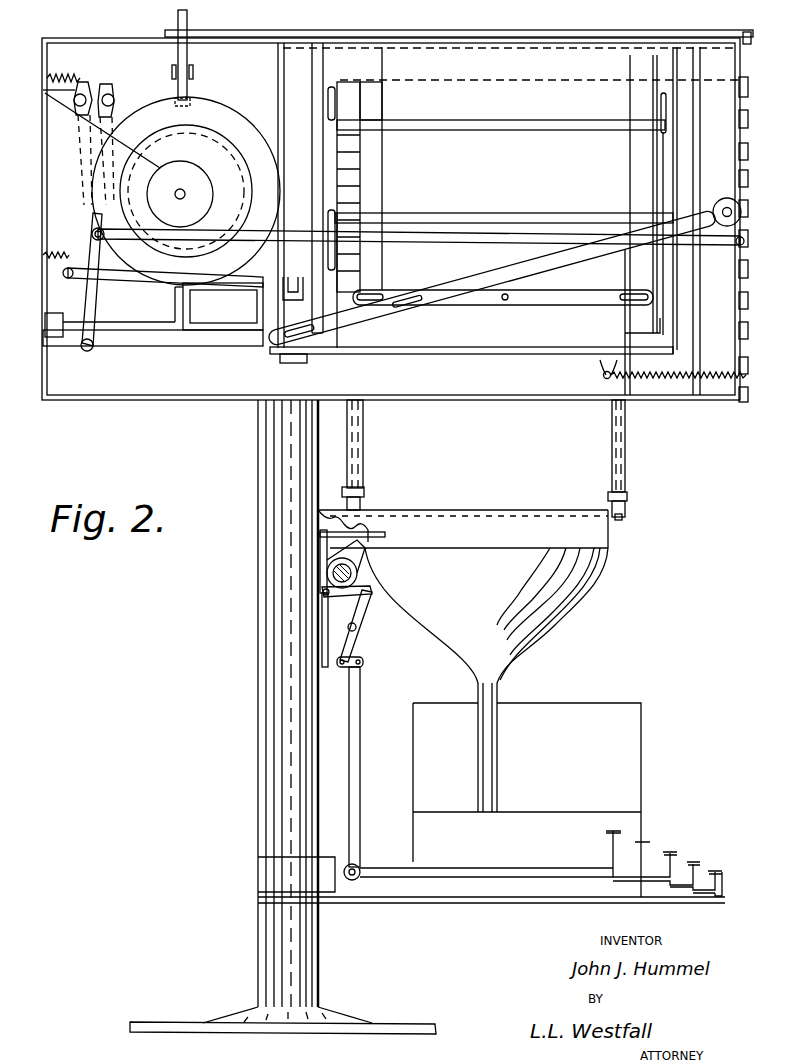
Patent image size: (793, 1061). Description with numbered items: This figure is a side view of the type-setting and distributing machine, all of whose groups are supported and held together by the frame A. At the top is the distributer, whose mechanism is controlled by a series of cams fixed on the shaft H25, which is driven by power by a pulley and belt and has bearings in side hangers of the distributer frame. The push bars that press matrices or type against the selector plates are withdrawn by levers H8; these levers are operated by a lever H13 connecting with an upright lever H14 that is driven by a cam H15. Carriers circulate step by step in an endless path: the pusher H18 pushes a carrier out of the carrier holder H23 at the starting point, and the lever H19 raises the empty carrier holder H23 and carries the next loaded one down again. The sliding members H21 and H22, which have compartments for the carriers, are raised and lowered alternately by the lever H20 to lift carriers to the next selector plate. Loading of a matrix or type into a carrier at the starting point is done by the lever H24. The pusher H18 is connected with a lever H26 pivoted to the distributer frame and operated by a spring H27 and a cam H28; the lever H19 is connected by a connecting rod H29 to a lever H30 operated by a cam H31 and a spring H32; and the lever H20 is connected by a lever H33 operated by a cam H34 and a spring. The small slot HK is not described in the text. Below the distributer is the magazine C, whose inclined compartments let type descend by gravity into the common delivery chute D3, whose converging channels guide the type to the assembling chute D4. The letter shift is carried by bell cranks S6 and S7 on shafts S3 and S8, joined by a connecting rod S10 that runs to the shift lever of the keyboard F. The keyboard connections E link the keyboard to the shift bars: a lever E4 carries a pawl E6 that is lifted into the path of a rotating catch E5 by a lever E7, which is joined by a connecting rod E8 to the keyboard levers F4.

The lever H13 is at (510, 37).
The upright lever H14 is at (188, 60).
The cam H15 is at (215, 112).
The shaft H25 is at (192, 182).
The cam H28 is at (250, 192).
The cam H34 is at (244, 180).
The spring H32 is at (53, 78).
The lever H30 is at (86, 123).
The connecting rod H29 is at (418, 237).
The cam H31 is at (140, 260).
The lever H26 is at (94, 303).
The lever H24 is at (124, 330).
The lever H33 is at (245, 292).
The sliding member H22 is at (377, 172).
The pusher H18 is at (530, 124).
The carrier holder H23 is at (295, 298).
The sliding member H21 is at (646, 213).
The slot HK is at (666, 101).
The lever H8 is at (754, 240).
The lever H19 is at (504, 272).
The lever H20 is at (503, 298).
The spring H27 is at (603, 375).
The frame A is at (314, 947).
The shaft S8 is at (354, 448).
The bell crank S7 is at (344, 505).
The magazine C is at (488, 457).
The shaft S3 is at (626, 450).
The bell crank S6 is at (627, 515).
The keyboard connections E is at (463, 529).
The connecting rod S10 is at (556, 522).
The lever E4 is at (320, 566).
The rotating catch E5 is at (350, 575).
The pawl E6 is at (322, 598).
The lever E7 is at (355, 614).
The connecting rod E8 is at (352, 652).
The keyboard lever F4 is at (356, 764).
The common delivery chute D3 is at (486, 615).
The assembling chute D4 is at (488, 752).
The keyboard F is at (522, 876).